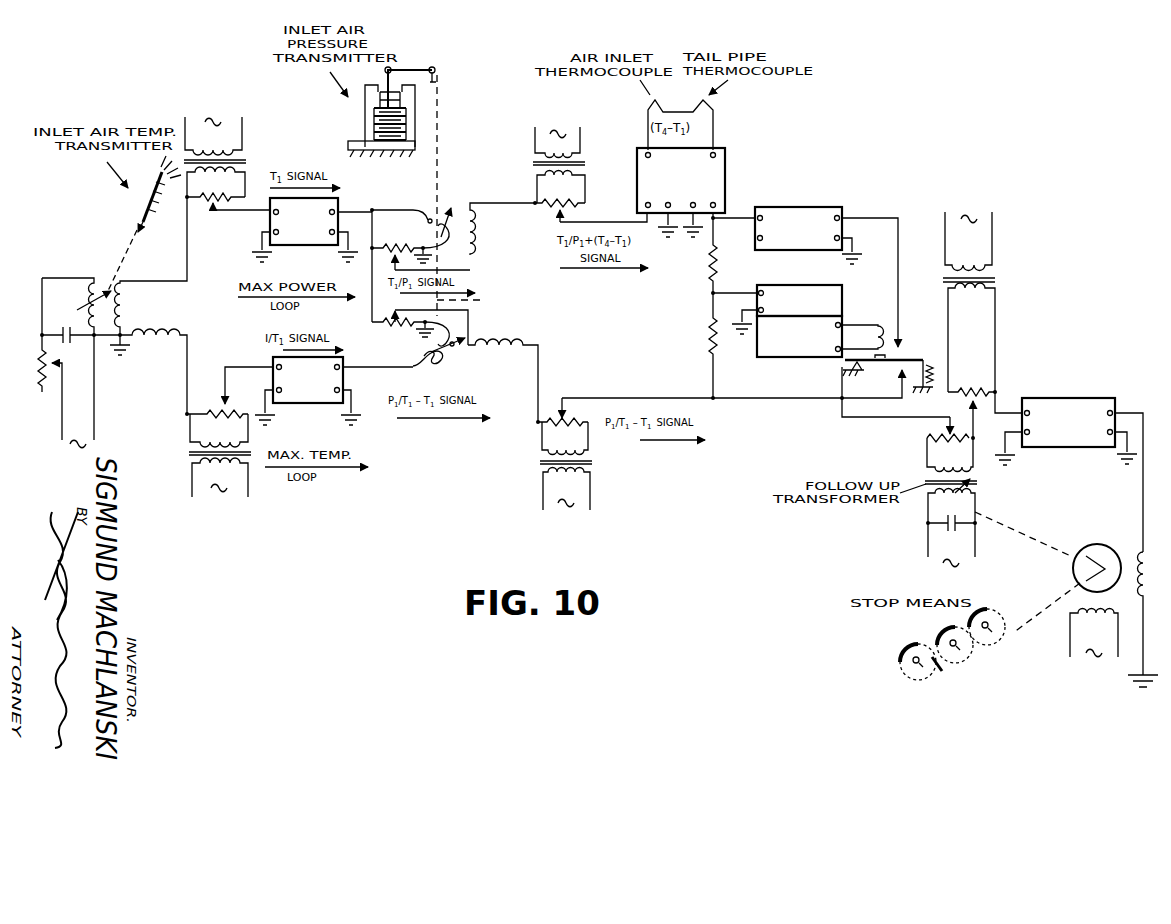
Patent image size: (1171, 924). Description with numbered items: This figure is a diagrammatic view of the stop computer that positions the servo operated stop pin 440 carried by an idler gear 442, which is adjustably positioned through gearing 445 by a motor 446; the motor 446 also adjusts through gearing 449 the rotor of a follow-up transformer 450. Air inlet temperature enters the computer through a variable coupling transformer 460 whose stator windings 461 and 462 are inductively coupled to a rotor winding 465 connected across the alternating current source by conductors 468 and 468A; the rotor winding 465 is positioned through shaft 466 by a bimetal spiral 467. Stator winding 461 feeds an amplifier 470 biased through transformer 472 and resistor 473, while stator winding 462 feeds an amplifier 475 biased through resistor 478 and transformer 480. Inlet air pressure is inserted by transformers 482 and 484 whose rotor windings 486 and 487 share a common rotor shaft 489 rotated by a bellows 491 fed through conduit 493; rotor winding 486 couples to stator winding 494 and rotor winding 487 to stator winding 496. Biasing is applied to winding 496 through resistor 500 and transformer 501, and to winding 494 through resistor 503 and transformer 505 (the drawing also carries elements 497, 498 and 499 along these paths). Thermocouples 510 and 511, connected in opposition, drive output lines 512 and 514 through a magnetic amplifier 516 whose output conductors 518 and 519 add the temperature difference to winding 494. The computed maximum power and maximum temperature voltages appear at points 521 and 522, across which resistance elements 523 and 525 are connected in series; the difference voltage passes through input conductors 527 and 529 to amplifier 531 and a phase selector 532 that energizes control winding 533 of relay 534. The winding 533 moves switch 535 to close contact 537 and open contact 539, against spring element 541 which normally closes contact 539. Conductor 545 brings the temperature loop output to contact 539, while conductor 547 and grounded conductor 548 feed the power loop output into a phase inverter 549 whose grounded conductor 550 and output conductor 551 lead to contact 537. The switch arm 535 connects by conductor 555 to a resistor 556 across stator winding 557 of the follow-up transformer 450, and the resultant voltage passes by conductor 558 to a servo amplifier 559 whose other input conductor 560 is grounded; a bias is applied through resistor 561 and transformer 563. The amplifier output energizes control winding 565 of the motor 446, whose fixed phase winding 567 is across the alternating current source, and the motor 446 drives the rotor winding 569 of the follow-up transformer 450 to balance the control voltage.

The stop pin 440 is at (946, 671).
The idler gear 442 is at (907, 673).
The gearing 445 is at (985, 654).
The motor 446 is at (1091, 545).
The gearing 449 is at (1013, 531).
The follow-up transformer 450 is at (935, 492).
The variable coupling transformer 460 is at (129, 272).
The stator winding 461 is at (132, 304).
The stator winding 462 is at (152, 338).
The rotor winding 465 is at (92, 287).
The shaft 466 is at (126, 240).
The bimetal spiral 467 is at (63, 409).
The conductor 468 is at (94, 382).
The conductor 468A is at (137, 203).
The amplifier 470 is at (298, 246).
The transformer 472 is at (245, 158).
The resistor 473 is at (204, 206).
The amplifier 475 is at (300, 405).
The resistor 478 is at (205, 418).
The transformer 480 is at (205, 459).
The transformer 482 is at (449, 197).
The transformer 484 is at (458, 356).
The rotor winding 486 is at (428, 216).
The rotor winding 487 is at (425, 356).
The rotor shaft 489 is at (440, 141).
The pressure sensitive bellows 491 is at (402, 128).
The conduit 493 is at (362, 151).
The stator winding 494 is at (478, 230).
The stator winding 496 is at (504, 341).
The conductor 497 is at (372, 303).
The potentiometer 498 is at (393, 250).
The potentiometer 499 is at (410, 329).
The resistor 500 is at (547, 424).
The transformer 501 is at (548, 465).
The resistor 503 is at (574, 202).
The transformer 505 is at (537, 167).
The thermocouple 510 is at (651, 104).
The thermocouple 511 is at (716, 104).
The output line 512 is at (647, 130).
The output line 514 is at (716, 130).
The magnetic amplifier 516 is at (727, 169).
The conductor 518 is at (719, 208).
The conductor 519 is at (693, 226).
The point 521 is at (712, 236).
The point 522 is at (711, 396).
The resistance element 523 is at (711, 271).
The resistance element 525 is at (711, 336).
The input conductor 527 is at (735, 292).
The input conductor 529 is at (715, 313).
The amplifier 531 is at (781, 288).
The phase selector 532 is at (783, 360).
The control winding 533 is at (878, 326).
The relay 534 is at (920, 344).
The switch 535 is at (922, 361).
The contact 537 is at (904, 345).
The contact 539 is at (898, 368).
The spring element 541 is at (934, 375).
The conductor 545 is at (740, 400).
The conductor 547 is at (737, 216).
The grounded conductor 548 is at (736, 232).
The phase inverter 549 is at (810, 205).
The grounded conductor 550 is at (848, 237).
The output conductor 551 is at (862, 215).
The conductor 555 is at (850, 419).
The resistor 556 is at (926, 437).
The stator winding 557 is at (935, 465).
The conductor 558 is at (1000, 410).
The servo amplifier 559 is at (1049, 398).
The input conductor 560 is at (1012, 450).
The resistor 561 is at (980, 391).
The transformer 563 is at (996, 281).
The control winding 565 is at (1134, 558).
The fixed phase winding 567 is at (1094, 633).
The rotor winding 569 is at (932, 505).